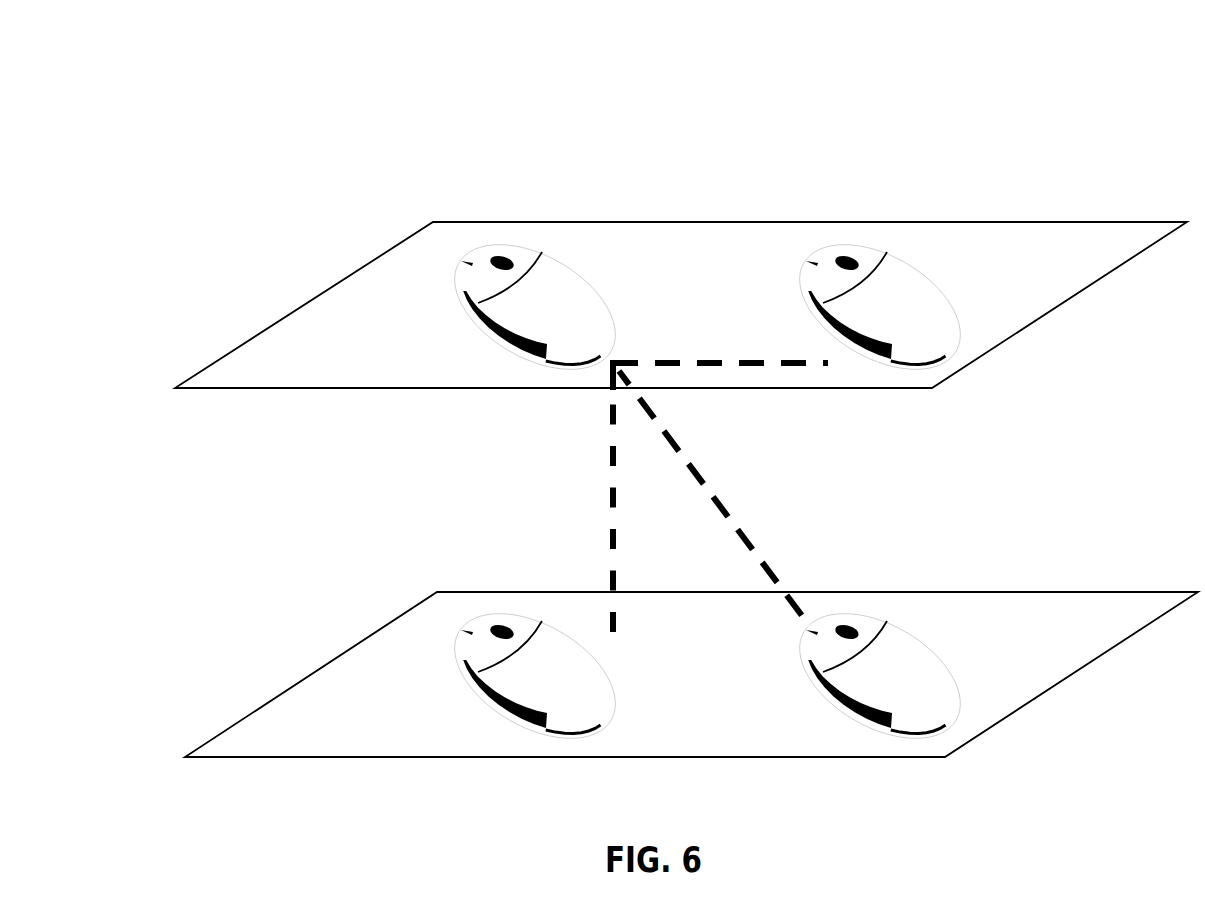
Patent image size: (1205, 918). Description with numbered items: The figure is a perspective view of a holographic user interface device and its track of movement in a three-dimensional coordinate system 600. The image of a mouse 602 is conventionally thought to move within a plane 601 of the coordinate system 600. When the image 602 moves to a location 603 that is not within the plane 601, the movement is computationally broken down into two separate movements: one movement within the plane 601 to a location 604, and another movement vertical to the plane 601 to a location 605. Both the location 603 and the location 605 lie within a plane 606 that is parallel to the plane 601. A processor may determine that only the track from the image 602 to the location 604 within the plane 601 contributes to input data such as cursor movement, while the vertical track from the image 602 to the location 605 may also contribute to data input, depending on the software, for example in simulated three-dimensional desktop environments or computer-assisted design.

The 3-D coordinate system 600 is at (840, 115).
The plane 601 is at (268, 377).
The image of a mouse 602 is at (542, 235).
The location 603 is at (865, 733).
The location 604 is at (887, 233).
The location 605 is at (493, 722).
The plane 606 is at (268, 745).